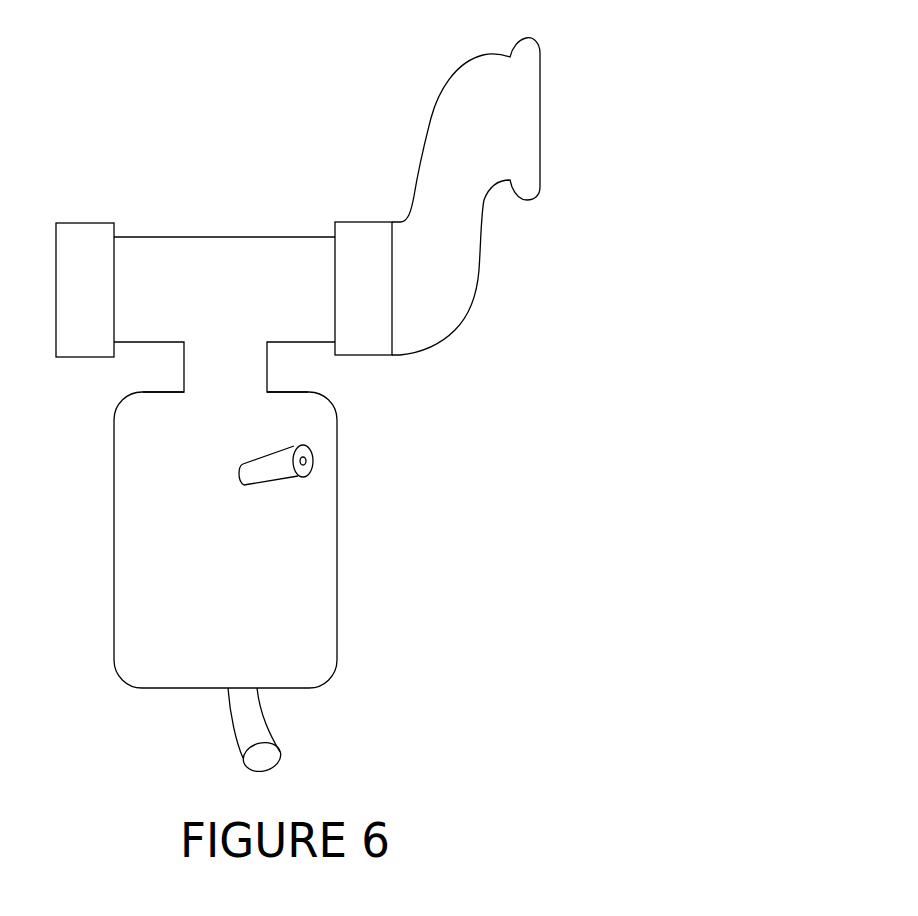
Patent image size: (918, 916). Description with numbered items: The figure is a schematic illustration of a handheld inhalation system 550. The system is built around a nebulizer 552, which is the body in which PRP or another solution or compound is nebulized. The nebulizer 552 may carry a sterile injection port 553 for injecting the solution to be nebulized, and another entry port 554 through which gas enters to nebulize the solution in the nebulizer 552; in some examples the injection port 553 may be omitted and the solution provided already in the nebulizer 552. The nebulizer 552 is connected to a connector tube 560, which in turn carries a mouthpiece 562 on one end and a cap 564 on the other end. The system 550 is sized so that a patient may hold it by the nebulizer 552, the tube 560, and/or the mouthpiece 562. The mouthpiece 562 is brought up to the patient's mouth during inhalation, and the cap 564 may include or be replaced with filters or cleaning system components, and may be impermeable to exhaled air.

The handheld inhalation system 550 is at (498, 506).
The nebulizer 552 is at (115, 572).
The sterile injection port 553 is at (297, 447).
The entry port 554 is at (267, 727).
The connector tube 560 is at (245, 292).
The mouthpiece 562 is at (430, 118).
The cap 564 is at (83, 223).